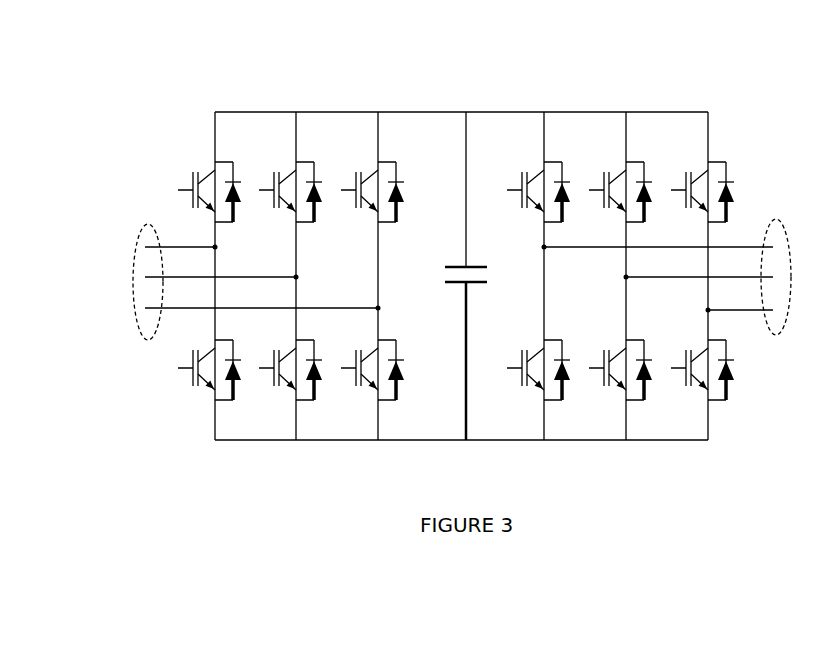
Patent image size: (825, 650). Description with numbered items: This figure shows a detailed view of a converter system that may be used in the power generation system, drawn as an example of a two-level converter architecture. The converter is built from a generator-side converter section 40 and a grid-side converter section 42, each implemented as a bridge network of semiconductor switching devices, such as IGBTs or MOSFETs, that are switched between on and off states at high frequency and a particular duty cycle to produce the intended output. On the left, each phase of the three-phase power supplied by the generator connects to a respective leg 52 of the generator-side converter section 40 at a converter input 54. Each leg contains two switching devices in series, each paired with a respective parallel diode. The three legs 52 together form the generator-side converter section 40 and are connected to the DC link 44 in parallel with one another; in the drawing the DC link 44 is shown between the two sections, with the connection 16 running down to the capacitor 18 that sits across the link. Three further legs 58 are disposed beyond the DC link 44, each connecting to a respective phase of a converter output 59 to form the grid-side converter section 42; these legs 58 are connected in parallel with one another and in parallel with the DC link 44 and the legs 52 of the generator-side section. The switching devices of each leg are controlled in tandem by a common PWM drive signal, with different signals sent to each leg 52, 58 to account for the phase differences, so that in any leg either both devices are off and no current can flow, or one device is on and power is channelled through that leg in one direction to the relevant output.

The DC link 16 is at (466, 158).
The DC link capacitor 18 is at (472, 283).
The generator-side converter section 40 is at (279, 291).
The grid-side converter section 42 is at (637, 286).
The DC link 44 is at (420, 110).
The leg 52 is at (358, 463).
The converter input 54 is at (141, 227).
The leg 58 is at (695, 460).
The converter output 59 is at (788, 228).